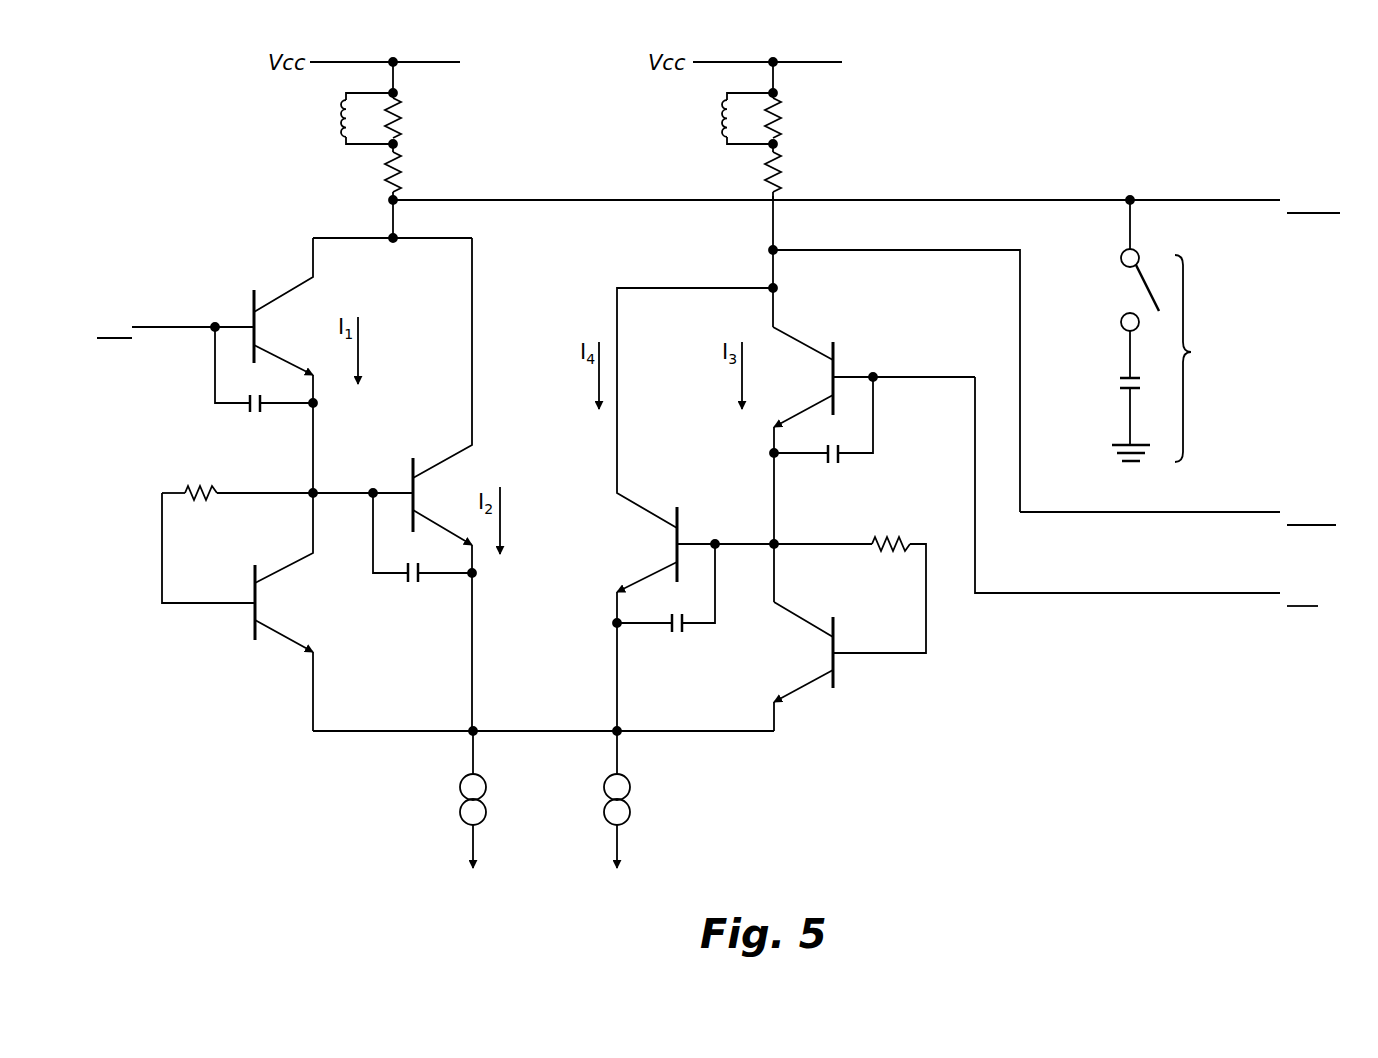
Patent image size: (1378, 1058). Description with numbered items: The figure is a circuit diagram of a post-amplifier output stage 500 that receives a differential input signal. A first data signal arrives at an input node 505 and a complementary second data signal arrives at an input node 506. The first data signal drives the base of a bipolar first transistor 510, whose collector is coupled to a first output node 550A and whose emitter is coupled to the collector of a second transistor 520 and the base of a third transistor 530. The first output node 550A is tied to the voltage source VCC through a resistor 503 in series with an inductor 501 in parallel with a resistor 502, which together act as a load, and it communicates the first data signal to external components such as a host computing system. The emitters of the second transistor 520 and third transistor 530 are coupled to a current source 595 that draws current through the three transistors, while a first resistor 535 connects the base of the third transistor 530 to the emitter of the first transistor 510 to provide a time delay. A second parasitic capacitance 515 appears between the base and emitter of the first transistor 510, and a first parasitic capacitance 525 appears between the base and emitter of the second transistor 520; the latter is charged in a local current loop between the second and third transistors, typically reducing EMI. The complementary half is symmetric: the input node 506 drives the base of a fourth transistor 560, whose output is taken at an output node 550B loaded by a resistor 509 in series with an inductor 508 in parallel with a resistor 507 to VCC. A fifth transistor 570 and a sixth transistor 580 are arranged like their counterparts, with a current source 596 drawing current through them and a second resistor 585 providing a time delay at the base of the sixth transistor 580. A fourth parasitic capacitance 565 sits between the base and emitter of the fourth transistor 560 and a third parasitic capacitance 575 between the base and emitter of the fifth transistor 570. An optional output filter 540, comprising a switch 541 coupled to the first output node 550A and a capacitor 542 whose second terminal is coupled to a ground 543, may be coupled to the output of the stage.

The post-amplifier output stage 500 is at (1075, 100).
The inductor 501 is at (346, 128).
The resistor 502 is at (401, 124).
The resistor 503 is at (401, 176).
The input node 505 is at (146, 322).
The input node 506 is at (1252, 595).
The resistor 507 is at (781, 124).
The inductor 508 is at (727, 128).
The resistor 509 is at (781, 176).
The first transistor 510 is at (247, 314).
The second parasitic capacitance 515 is at (247, 412).
The second transistor 520 is at (406, 480).
The first parasitic capacitance 525 is at (405, 580).
The third transistor 530 is at (250, 612).
The first resistor 535 is at (188, 490).
The output filter 540 is at (1210, 358).
The switch 541 is at (1123, 283).
The capacitor 542 is at (1120, 385).
The ground 543 is at (1130, 467).
The first output node 550A is at (1252, 202).
The output node 550B is at (1252, 514).
The fourth transistor 560 is at (842, 363).
The fourth parasitic capacitance 565 is at (841, 463).
The fifth transistor 570 is at (685, 534).
The third parasitic capacitance 575 is at (686, 629).
The sixth transistor 580 is at (845, 667).
The second resistor 585 is at (896, 542).
The current source 595 is at (487, 814).
The current source 596 is at (631, 814).